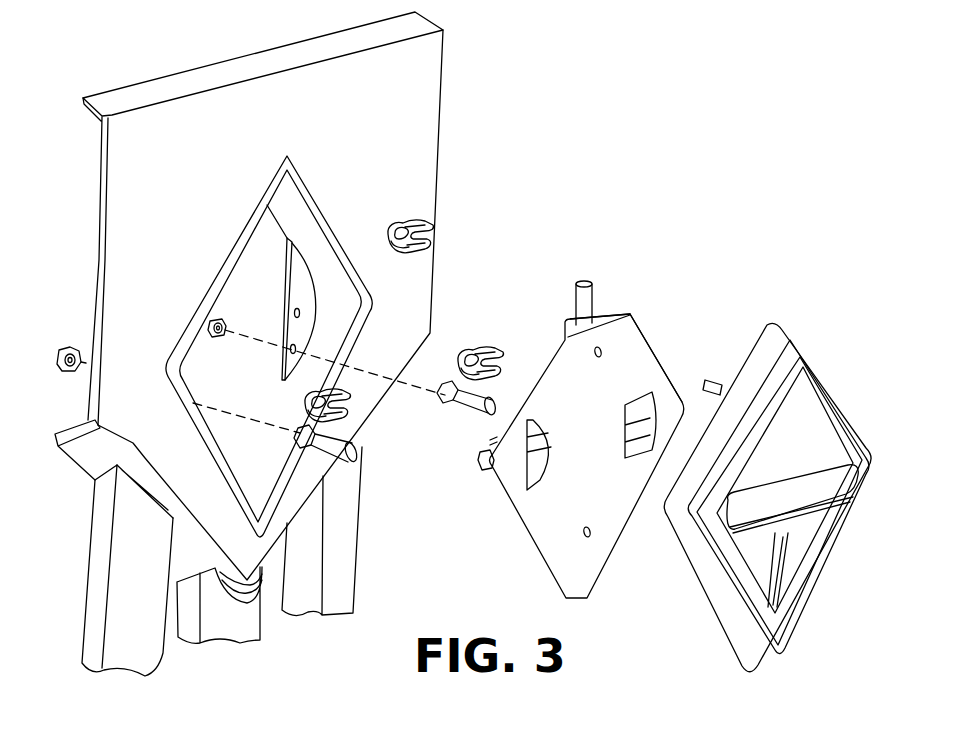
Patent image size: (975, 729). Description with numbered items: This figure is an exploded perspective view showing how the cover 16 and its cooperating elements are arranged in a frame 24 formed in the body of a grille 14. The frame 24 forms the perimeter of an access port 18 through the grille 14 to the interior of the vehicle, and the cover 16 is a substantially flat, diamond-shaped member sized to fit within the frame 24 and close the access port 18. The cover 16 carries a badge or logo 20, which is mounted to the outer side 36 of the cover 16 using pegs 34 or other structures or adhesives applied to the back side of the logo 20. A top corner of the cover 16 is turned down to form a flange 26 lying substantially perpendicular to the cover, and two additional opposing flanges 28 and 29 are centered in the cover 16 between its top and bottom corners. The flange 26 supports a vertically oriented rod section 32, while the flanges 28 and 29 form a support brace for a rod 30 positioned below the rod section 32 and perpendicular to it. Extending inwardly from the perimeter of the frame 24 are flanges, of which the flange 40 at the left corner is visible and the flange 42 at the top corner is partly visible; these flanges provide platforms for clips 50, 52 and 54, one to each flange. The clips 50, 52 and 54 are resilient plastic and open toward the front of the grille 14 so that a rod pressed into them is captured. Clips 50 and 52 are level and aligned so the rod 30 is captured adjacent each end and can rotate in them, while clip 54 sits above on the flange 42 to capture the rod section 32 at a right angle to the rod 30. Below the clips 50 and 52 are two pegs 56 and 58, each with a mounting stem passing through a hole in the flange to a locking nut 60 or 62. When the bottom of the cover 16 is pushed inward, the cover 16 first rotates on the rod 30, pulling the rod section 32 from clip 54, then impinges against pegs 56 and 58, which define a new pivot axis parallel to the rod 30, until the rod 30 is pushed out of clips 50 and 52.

The grille 14 is at (430, 168).
The cover 16 is at (640, 340).
The access port 18 is at (264, 311).
The logo 20 is at (793, 336).
The frame 24 is at (307, 218).
The flange 26 is at (607, 318).
The flange 28 is at (652, 410).
The flange 29 is at (495, 442).
The rod 30 is at (480, 468).
The rod section 32 is at (576, 292).
The pegs 34 is at (713, 378).
The outer side 36 is at (610, 494).
The flange 40 is at (277, 360).
The flange 42 is at (280, 230).
The clip 50 is at (500, 356).
The clip 52 is at (362, 418).
The clip 54 is at (432, 233).
The peg 56 is at (480, 407).
The peg 58 is at (365, 455).
The locking nut 60 is at (218, 337).
The locking nut 62 is at (67, 372).